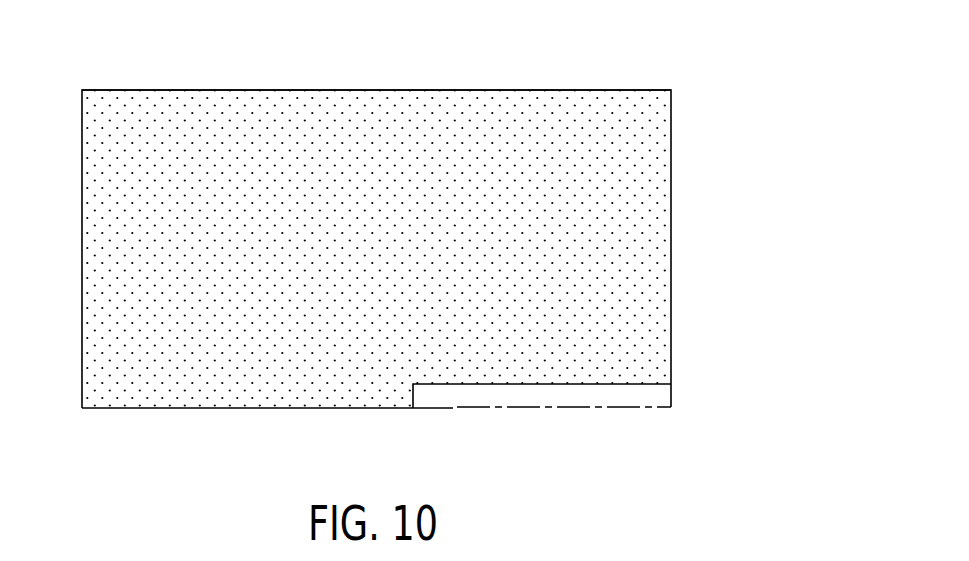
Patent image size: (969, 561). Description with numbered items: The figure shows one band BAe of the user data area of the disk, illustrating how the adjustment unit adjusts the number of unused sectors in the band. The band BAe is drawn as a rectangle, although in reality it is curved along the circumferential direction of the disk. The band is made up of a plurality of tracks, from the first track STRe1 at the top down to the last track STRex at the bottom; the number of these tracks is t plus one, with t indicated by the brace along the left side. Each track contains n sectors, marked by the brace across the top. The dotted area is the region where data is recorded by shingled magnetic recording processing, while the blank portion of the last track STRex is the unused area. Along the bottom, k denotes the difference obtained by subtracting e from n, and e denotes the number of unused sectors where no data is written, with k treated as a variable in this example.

The band BAe is at (703, 69).
The first track STRe1 is at (678, 99).
The x-th track STRex is at (678, 398).
The number of sectors per track n is at (671, 85).
The track count variable t is at (78, 92).
The number of used sectors in last track k is at (413, 414).
The number of unused sectors e is at (671, 412).